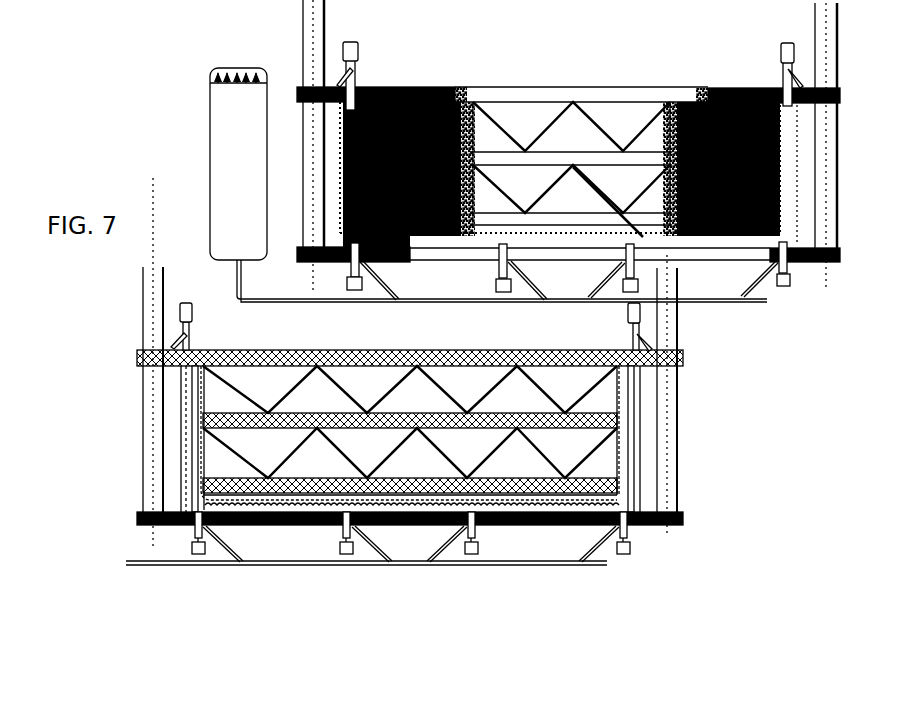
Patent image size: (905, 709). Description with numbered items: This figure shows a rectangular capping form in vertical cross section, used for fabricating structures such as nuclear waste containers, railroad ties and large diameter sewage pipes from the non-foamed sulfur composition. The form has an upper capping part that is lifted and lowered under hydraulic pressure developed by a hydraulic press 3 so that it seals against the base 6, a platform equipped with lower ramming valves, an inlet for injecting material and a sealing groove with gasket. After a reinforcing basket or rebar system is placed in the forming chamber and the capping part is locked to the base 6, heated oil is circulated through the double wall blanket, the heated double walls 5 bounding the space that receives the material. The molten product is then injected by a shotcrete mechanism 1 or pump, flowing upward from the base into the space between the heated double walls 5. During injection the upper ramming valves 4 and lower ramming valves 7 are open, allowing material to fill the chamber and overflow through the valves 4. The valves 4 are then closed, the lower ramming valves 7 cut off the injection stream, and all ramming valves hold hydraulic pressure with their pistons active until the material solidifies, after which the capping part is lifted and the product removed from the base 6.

The shotcrete mechanism 1 is at (225, 246).
The hydraulic press 3 is at (317, 34).
The upper ramming valves 4 is at (360, 72).
The flexible membrane 5 is at (499, 270).
The base 6 is at (436, 258).
The lower ramming valves 7 is at (568, 292).